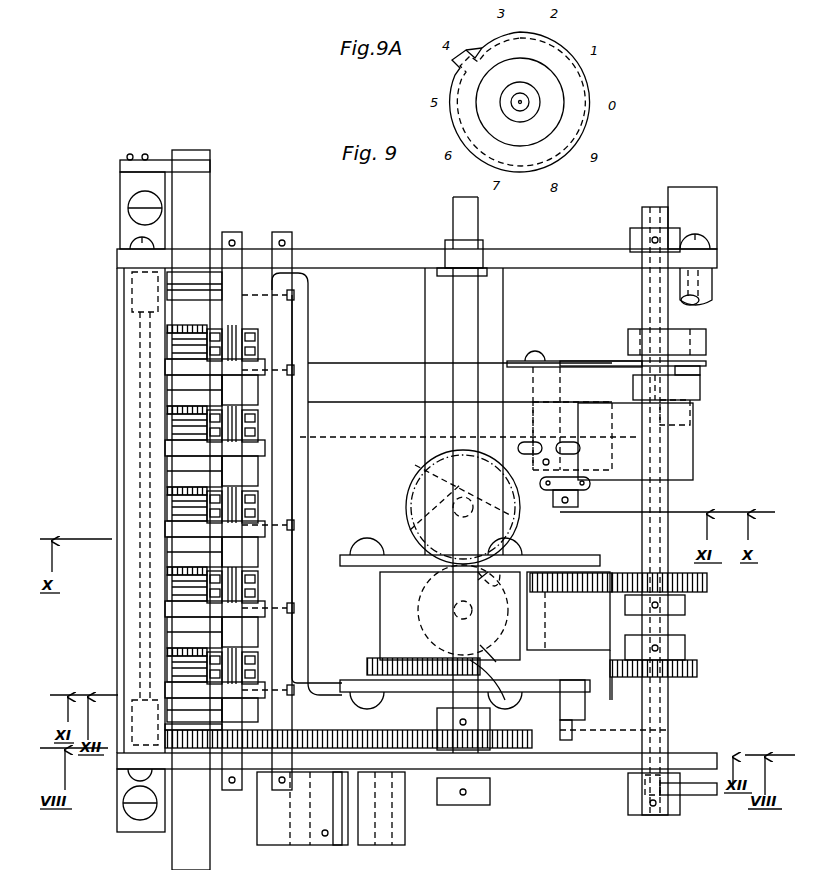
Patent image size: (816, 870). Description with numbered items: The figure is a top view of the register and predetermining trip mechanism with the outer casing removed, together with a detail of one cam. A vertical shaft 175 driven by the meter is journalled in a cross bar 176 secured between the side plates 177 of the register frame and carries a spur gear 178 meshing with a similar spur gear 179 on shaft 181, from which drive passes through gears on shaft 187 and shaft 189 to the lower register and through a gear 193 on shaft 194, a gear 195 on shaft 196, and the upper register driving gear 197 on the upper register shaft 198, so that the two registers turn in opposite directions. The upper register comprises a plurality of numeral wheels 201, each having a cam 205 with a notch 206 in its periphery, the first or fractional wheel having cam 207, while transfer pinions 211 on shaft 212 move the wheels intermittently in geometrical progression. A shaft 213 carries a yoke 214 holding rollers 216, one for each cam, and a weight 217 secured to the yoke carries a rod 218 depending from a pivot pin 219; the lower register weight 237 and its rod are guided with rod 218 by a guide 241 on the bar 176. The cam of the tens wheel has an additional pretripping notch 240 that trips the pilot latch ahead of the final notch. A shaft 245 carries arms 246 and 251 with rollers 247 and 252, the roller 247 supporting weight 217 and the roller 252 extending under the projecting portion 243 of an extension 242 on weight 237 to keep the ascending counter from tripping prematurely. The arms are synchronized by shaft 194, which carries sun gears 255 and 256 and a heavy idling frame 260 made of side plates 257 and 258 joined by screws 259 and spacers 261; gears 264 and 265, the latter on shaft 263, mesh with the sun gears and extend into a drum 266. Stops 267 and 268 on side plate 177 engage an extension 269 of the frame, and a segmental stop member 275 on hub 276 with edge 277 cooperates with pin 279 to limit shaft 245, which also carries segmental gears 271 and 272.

In FIG. 9, the vertical shaft 175 is at (410, 490).
In FIG. 9, the cross bar 176 is at (500, 720).
In FIG. 9, the side plates 177 is at (516, 250).
In FIG. 9, the spur gear 178 is at (450, 470).
In FIG. 9, the spur gear 179 is at (496, 660).
In FIG. 9, the shaft 181 is at (420, 612).
In FIG. 9, the shaft 187 is at (400, 835).
In FIG. 9, the shaft 189 is at (270, 832).
In FIG. 9, the gear 193 is at (432, 756).
In FIG. 9, the shaft 194 is at (465, 762).
In FIG. 9, the gear 195 is at (300, 750).
In FIG. 9, the shaft 196 is at (381, 808).
In FIG. 9, the upper register driving gear 197 is at (203, 750).
In FIG. 9, the upper register shaft 198 is at (210, 192).
In FIG. 9A, the numeral wheels 201 is at (586, 84).
In FIG. 9, the numeral wheels 201 is at (178, 710).
In FIG. 9A, the cam 205 is at (560, 38).
In FIG. 9, the cam 205 is at (205, 302).
In FIG. 9A, the notch 206 is at (455, 107).
In FIG. 9, the first numeral wheel cam 207 is at (176, 692).
In FIG. 9, the transfer pinions 211 is at (215, 343).
In FIG. 9, the shaft 212 is at (234, 232).
In FIG. 9, the shaft 213 is at (292, 238).
In FIG. 9, the yoke 214 is at (308, 280).
In FIG. 9, the rollers 216 is at (296, 296).
In FIG. 9, the weight 217 is at (694, 470).
In FIG. 9, the rod 218 is at (592, 485).
In FIG. 9, the pivot pin 219 is at (580, 505).
In FIG. 9, the weight 237 is at (385, 363).
In FIG. 9A, the pretripping notch 240 is at (500, 40).
In FIG. 9, the guide 241 is at (596, 463).
In FIG. 9, the extension 242 is at (562, 360).
In FIG. 9, the projecting portion 243 is at (706, 363).
In FIG. 9, the shaft 245 is at (668, 497).
In FIG. 9, the arm 246 is at (700, 388).
In FIG. 9, the roller 247 is at (692, 410).
In FIG. 9, the arm 251 is at (706, 334).
In FIG. 9, the roller 252 is at (700, 371).
In FIG. 9, the sun gear 255 is at (505, 700).
In FIG. 9, the sun gear 256 is at (482, 572).
In FIG. 9, the side plate 257 is at (346, 698).
In FIG. 9, the side plate 258 is at (540, 555).
In FIG. 9, the screws 259 is at (352, 552).
In FIG. 9, the frame 260 is at (398, 580).
In FIG. 9, the spacers 261 is at (380, 610).
In FIG. 9, the shaft 263 is at (575, 672).
In FIG. 9, the gear 264 is at (382, 656).
In FIG. 9, the gear 265 is at (578, 573).
In FIG. 9, the cylindrical drum 266 is at (612, 690).
In FIG. 9, the external stop 267 is at (660, 732).
In FIG. 9, the external stop 268 is at (572, 738).
In FIG. 9, the extension 269 is at (585, 718).
In FIG. 9, the segmental gear 271 is at (697, 668).
In FIG. 9, the segmental gear 272 is at (707, 586).
In FIG. 9, the segmental stop member 275 is at (700, 796).
In FIG. 9, the hub 276 is at (682, 815).
In FIG. 9, the edge 277 is at (668, 785).
In FIG. 9, the stop pin 279 is at (645, 790).